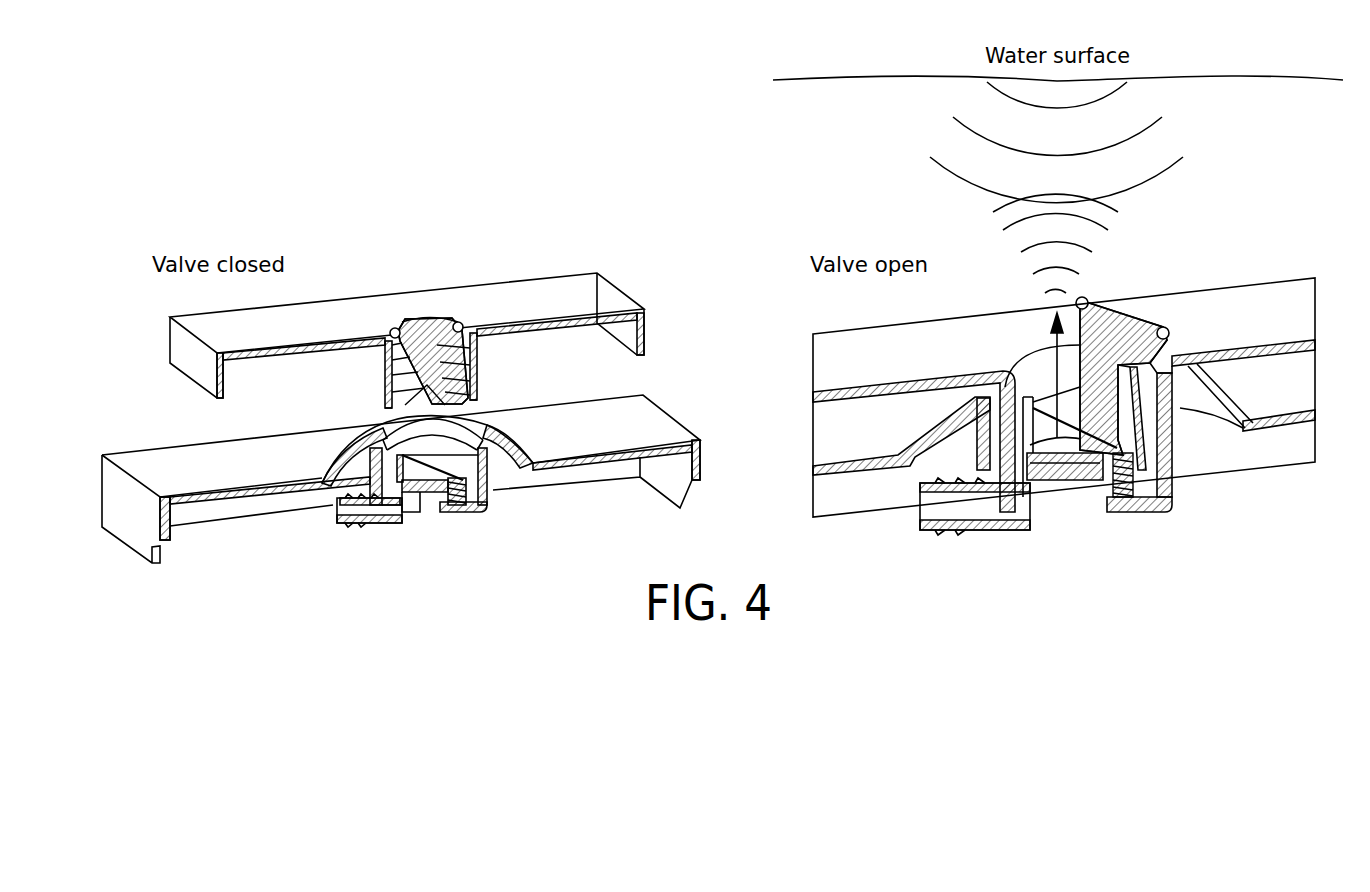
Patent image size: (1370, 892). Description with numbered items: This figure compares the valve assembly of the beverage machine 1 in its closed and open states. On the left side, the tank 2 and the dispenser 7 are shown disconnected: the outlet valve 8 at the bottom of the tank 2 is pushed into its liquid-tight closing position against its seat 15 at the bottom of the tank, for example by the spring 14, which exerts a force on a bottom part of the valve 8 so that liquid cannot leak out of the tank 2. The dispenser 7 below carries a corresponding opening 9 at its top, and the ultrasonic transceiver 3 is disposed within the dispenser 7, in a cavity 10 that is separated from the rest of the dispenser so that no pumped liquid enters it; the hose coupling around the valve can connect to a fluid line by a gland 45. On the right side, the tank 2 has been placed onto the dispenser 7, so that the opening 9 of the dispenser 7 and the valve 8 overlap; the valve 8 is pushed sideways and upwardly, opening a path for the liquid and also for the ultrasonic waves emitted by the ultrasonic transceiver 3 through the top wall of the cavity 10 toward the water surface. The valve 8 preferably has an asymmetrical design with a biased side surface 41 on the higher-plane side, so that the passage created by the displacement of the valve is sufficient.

The beverage machine 1 is at (1065, 365).
The tank 2 is at (571, 268).
The ultrasonic transceiver 3 is at (430, 484).
The dispenser 7 is at (604, 497).
The outlet valve 8 is at (440, 309).
The opening 9 is at (457, 455).
The cavity 10 is at (438, 503).
The spring 14 is at (470, 370).
The seat 15 is at (392, 333).
The biased side surface 41 is at (1143, 415).
The gland 45 is at (353, 527).